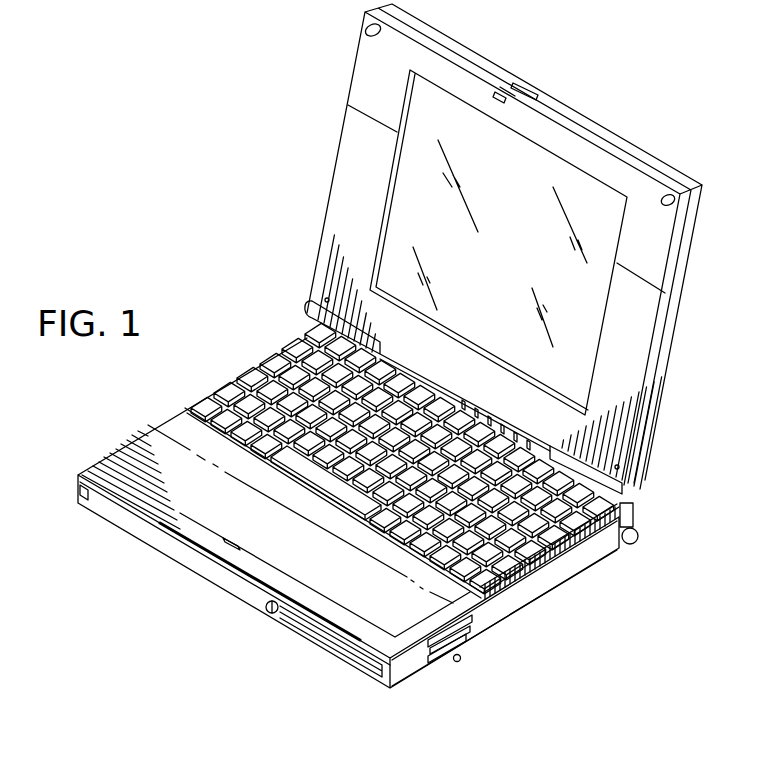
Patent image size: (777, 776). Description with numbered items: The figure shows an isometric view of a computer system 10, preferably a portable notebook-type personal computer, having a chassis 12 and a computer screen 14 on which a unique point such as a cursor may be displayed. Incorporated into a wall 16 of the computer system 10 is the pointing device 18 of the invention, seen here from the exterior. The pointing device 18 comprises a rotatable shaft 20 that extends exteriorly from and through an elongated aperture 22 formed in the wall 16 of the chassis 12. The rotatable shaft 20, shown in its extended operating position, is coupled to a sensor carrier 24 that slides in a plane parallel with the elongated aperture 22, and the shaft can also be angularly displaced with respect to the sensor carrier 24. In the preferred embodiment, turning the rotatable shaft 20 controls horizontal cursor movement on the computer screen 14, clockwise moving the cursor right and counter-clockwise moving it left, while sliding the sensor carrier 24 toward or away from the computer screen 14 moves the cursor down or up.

The computer system 10 is at (252, 272).
The chassis 12 is at (619, 555).
The computer screen 14 is at (563, 180).
The wall 16 is at (502, 613).
The pointing device 18 is at (459, 663).
The rotatable shaft 20 is at (450, 657).
The elongated aperture 22 is at (458, 633).
The sensor carrier 24 is at (440, 650).